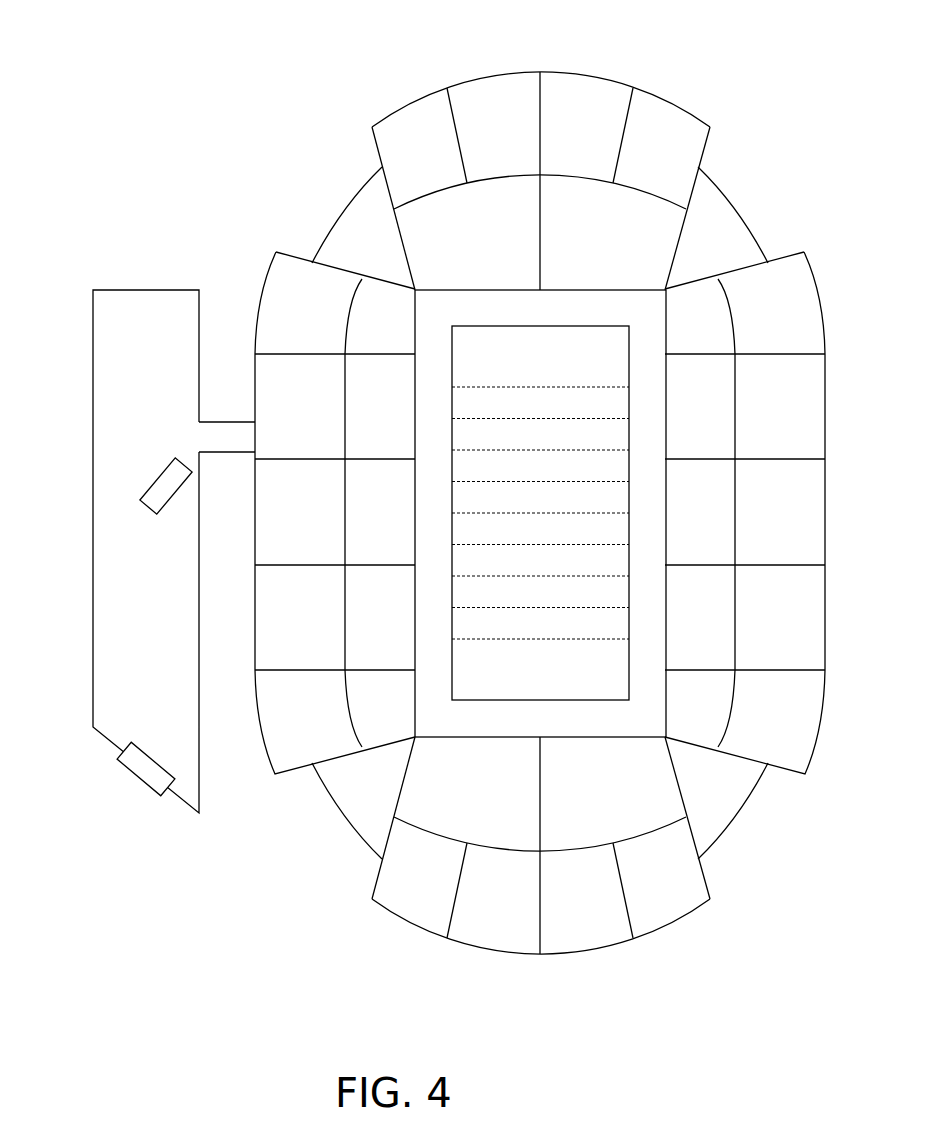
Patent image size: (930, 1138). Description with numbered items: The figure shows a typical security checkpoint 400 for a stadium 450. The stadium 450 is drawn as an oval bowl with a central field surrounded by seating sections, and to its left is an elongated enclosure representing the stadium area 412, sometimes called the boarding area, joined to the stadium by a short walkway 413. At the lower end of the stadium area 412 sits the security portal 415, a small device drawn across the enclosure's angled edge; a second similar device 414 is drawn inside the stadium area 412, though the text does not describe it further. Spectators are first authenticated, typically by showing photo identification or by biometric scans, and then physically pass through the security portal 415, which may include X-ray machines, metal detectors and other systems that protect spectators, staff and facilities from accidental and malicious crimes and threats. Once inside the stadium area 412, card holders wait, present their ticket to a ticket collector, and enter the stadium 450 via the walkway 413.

The security checkpoint 400 is at (422, 481).
The stadium area 412 is at (93, 381).
The walkway 413 is at (220, 422).
The device 414 is at (167, 510).
The security portal 415 is at (145, 750).
The stadium 450 is at (633, 90).